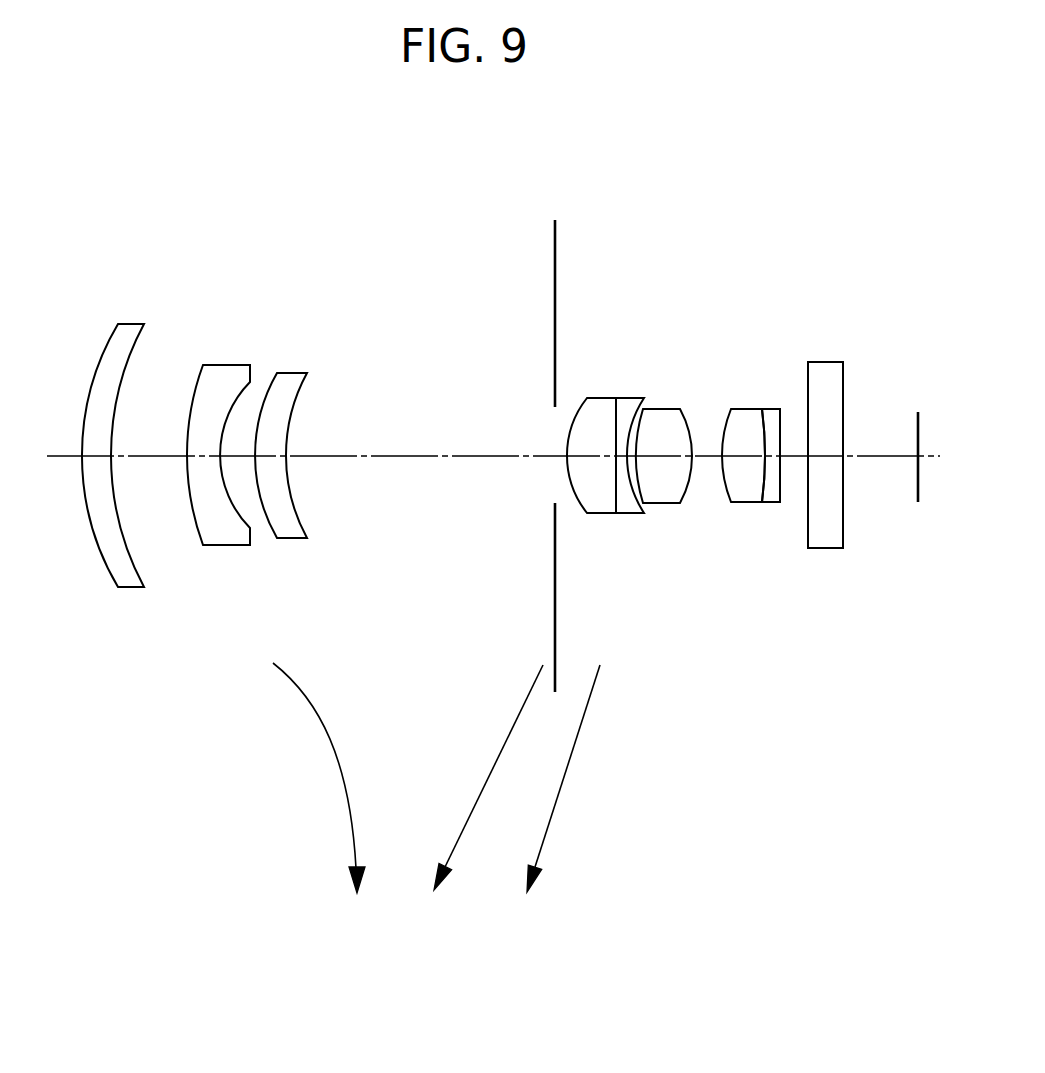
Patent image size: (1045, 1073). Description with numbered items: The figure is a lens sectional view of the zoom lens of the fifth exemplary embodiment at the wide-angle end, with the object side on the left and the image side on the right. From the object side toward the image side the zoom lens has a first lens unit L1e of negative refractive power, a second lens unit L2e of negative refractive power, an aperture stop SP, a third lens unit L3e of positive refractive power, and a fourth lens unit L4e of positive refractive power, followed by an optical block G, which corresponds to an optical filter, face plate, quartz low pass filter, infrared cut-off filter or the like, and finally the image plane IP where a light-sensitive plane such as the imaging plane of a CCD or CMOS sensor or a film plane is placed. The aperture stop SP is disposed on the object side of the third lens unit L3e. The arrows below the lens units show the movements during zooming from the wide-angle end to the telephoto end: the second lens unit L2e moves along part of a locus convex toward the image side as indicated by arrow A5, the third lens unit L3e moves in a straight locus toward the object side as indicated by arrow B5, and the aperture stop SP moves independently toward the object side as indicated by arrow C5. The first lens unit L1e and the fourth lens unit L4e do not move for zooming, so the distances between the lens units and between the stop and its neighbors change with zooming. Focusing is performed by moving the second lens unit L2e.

The first lens unit L1e is at (72, 208).
The second lens unit L2e is at (181, 208).
The third lens unit L3e is at (560, 210).
The fourth lens unit L4e is at (717, 208).
The optical block G is at (852, 208).
The aperture stop SP is at (555, 268).
The image plane IP is at (918, 427).
The movement locus of the second lens unit A5 is at (331, 778).
The movement locus of the third lens unit B5 is at (567, 778).
The movement locus of the aperture stop C5 is at (488, 777).